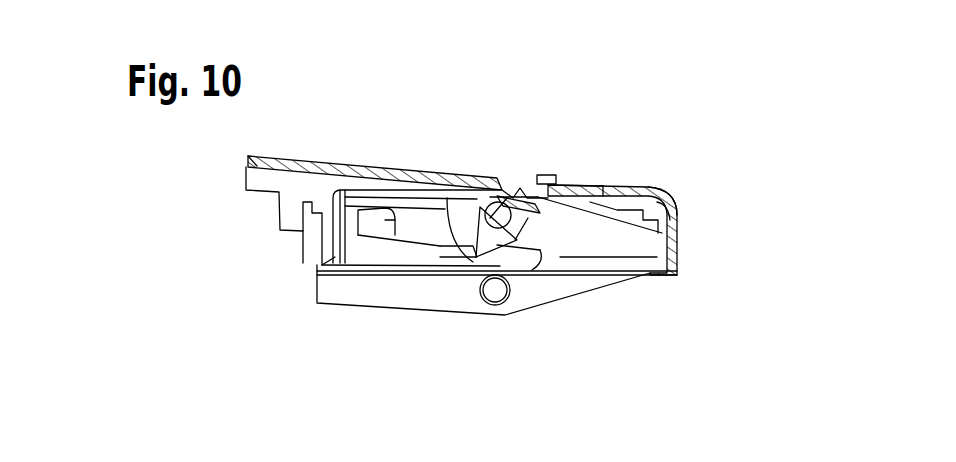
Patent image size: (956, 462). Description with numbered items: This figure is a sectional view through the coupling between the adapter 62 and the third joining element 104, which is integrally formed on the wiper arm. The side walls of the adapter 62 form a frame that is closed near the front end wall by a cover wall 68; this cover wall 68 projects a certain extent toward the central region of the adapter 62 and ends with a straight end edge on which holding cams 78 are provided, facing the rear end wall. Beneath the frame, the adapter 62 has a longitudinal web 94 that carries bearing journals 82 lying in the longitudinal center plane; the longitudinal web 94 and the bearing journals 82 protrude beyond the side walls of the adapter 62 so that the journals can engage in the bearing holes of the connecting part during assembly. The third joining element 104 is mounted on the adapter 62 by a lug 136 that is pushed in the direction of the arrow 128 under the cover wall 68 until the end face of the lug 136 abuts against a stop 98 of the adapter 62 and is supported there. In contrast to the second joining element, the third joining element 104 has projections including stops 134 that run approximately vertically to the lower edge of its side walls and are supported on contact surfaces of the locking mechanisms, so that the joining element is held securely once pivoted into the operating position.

The adapter 62 is at (690, 247).
The cover wall 68 is at (607, 187).
The holding cam 78 is at (549, 175).
The bearing journal 82 is at (496, 292).
The longitudinal web 94 is at (418, 295).
The stop 98 is at (654, 192).
The third joining element 104 is at (331, 150).
The arrow 128 is at (423, 202).
The stop 134 is at (278, 214).
The lug 136 is at (527, 197).